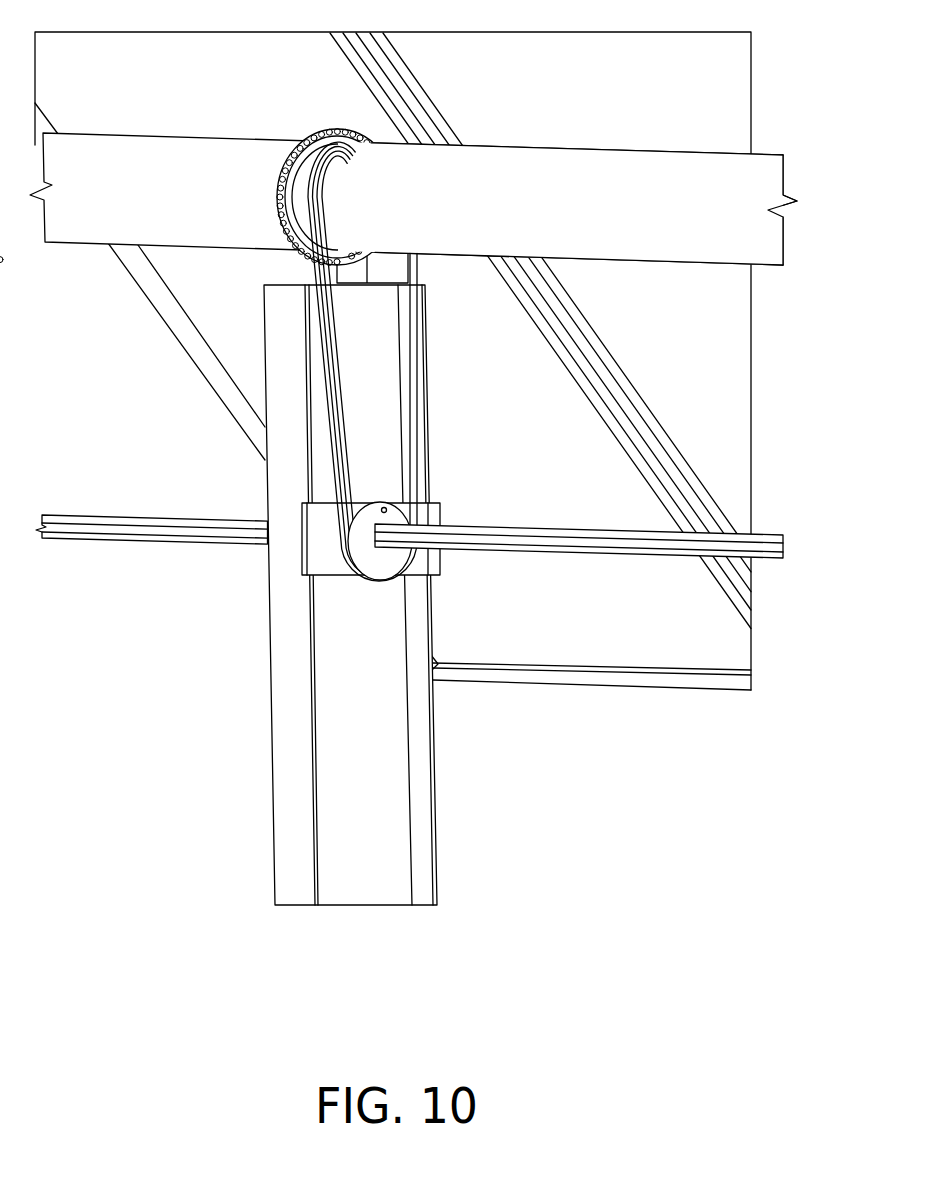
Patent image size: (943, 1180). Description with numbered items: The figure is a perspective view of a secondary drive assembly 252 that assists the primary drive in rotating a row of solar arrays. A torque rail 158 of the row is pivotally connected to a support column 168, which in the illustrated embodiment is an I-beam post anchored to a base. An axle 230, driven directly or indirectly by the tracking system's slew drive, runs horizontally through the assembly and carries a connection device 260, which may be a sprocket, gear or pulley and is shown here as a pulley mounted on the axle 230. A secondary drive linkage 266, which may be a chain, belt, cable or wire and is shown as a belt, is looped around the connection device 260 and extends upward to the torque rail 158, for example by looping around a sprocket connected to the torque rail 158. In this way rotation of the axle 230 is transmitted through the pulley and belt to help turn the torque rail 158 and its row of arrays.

The torque rail 158 is at (138, 190).
The support column 168 is at (353, 733).
The axle 230 is at (763, 553).
The secondary drive assembly 252 is at (449, 584).
The connection device 260 is at (383, 563).
The secondary drive linkage 266 is at (333, 462).